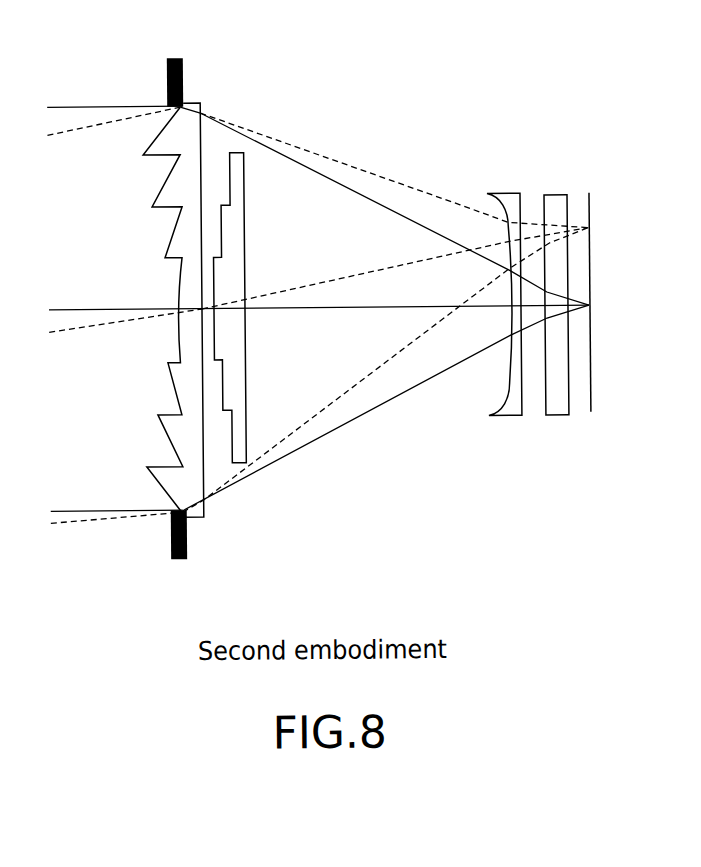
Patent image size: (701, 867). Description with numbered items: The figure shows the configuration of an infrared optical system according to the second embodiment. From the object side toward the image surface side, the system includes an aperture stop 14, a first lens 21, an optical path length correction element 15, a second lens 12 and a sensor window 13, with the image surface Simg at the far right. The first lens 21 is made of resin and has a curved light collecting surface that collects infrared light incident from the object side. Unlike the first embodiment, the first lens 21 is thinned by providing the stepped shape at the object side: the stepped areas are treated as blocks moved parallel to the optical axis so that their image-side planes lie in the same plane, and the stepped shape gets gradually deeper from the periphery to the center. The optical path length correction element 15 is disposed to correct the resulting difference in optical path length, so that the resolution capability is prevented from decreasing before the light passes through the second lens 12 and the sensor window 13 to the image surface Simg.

The second lens 12 is at (513, 202).
The sensor window 13 is at (558, 202).
The aperture stop 14 is at (169, 70).
The optical path length correction element 15 is at (241, 429).
The first lens 21 is at (179, 134).
The image plane Simg is at (589, 414).